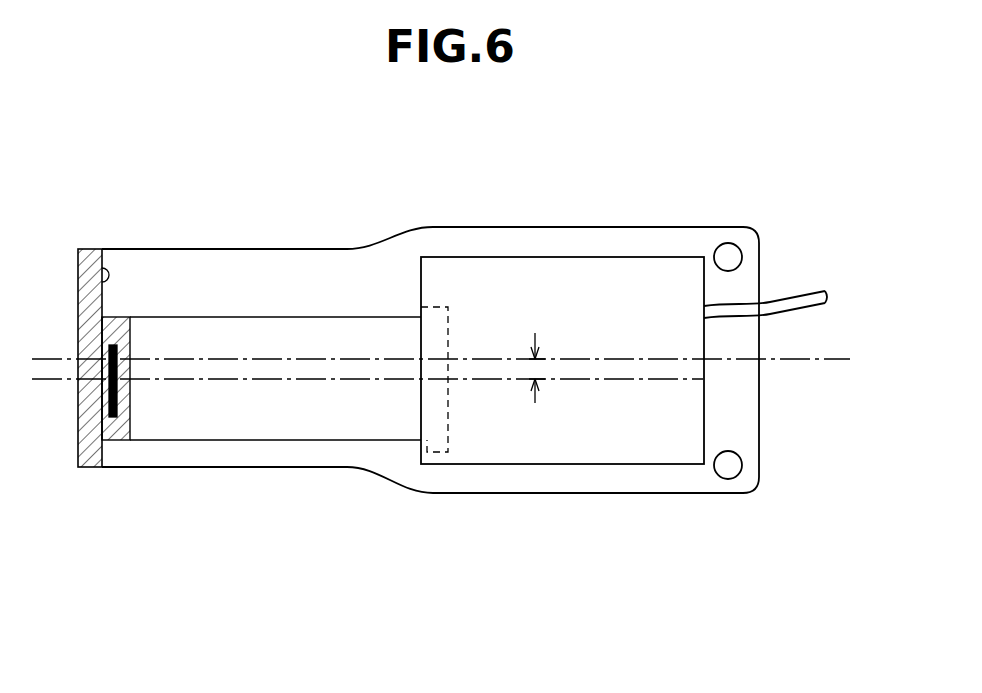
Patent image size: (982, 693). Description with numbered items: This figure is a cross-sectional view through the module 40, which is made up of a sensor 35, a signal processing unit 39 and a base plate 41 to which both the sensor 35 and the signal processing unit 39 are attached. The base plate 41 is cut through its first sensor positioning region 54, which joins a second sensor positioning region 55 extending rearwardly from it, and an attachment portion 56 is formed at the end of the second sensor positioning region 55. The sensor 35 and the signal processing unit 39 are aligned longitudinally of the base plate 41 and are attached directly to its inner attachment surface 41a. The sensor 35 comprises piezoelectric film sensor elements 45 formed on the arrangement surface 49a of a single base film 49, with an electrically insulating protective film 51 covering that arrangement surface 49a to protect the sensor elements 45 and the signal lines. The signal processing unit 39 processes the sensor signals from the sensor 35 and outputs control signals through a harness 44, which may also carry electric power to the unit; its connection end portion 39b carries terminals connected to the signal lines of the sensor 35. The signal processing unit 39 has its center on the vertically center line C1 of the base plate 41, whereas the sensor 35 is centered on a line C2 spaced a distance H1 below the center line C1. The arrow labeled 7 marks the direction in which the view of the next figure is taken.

The viewing direction arrow 7 is at (482, 200).
The sensor 35 is at (160, 576).
The signal processing unit 39 is at (555, 280).
The connection end portion 39b is at (448, 430).
The module 40 is at (760, 220).
The base plate 41 is at (278, 132).
The attachment surface 41a is at (108, 272).
The harness 44 is at (780, 300).
The piezoelectric film sensor element 45 is at (102, 410).
The base film 49 is at (126, 440).
The arrangement surface 49a is at (112, 317).
The protective film 51 is at (108, 440).
The first sensor positioning region 54 is at (88, 248).
The second sensor positioning region 55 is at (227, 248).
The attachment portion 56 is at (730, 235).
The vertically center line C1 is at (813, 361).
The line C2 is at (308, 381).
The distance H1 is at (555, 368).